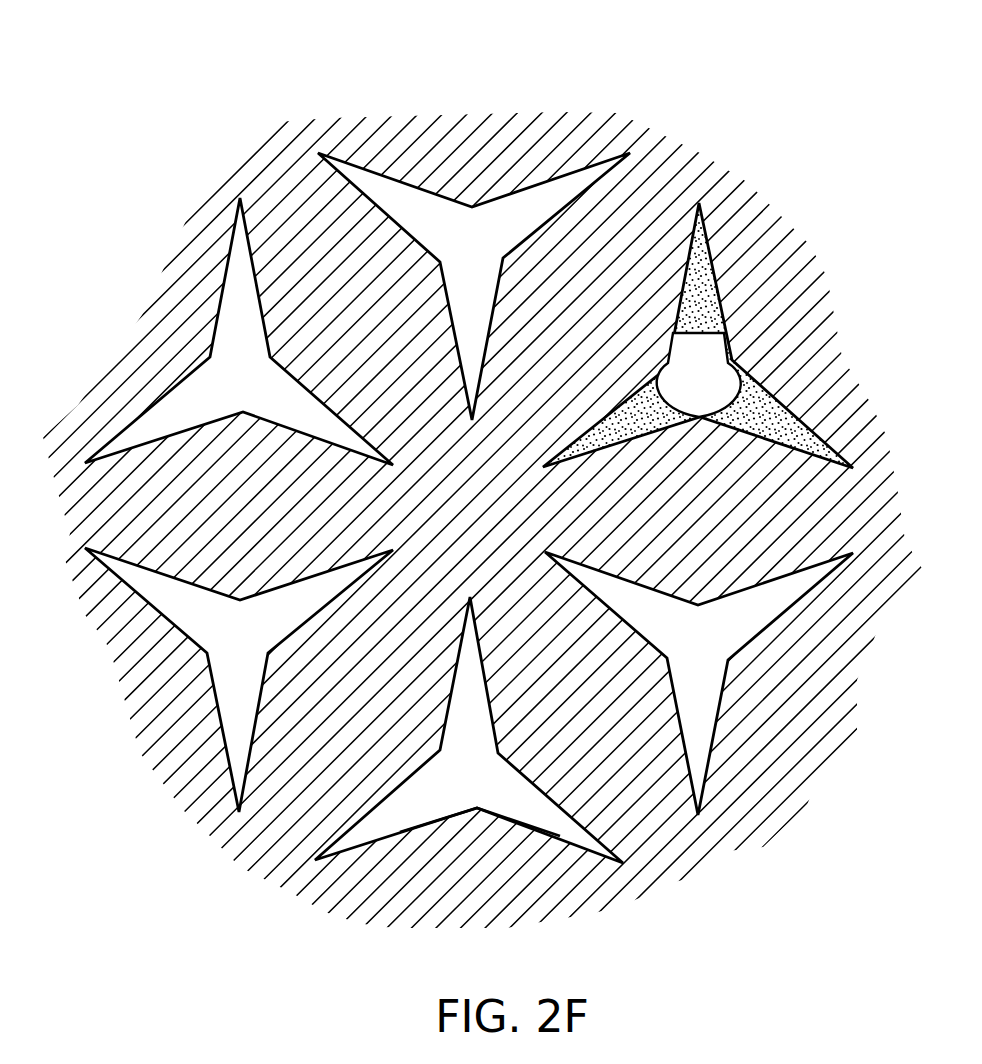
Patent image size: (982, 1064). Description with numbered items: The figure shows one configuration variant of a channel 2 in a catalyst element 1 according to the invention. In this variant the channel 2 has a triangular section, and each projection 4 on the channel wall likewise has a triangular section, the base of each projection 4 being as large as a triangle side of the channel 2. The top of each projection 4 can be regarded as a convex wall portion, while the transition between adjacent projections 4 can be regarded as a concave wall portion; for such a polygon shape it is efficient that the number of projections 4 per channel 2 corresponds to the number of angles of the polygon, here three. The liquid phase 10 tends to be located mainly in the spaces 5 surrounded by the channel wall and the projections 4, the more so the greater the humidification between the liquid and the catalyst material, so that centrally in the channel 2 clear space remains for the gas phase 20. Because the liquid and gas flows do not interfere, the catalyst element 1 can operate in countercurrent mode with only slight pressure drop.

The catalyst element 1 is at (604, 78).
The channel 2 is at (684, 658).
The projection 4 is at (477, 806).
The space 5 is at (499, 810).
The liquid phase 10 is at (700, 283).
The gas phase 20 is at (676, 395).